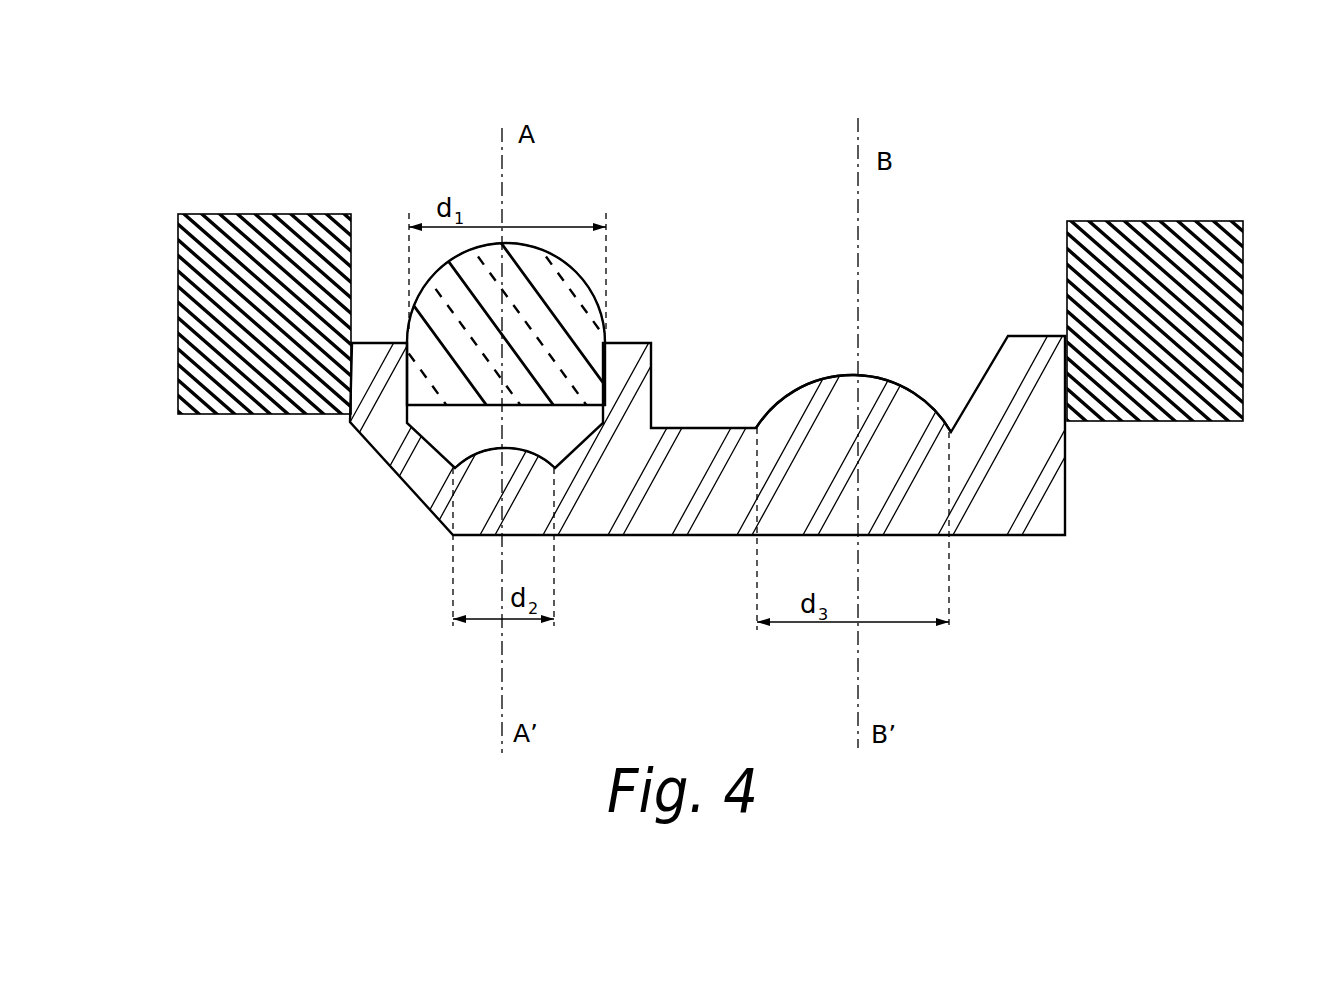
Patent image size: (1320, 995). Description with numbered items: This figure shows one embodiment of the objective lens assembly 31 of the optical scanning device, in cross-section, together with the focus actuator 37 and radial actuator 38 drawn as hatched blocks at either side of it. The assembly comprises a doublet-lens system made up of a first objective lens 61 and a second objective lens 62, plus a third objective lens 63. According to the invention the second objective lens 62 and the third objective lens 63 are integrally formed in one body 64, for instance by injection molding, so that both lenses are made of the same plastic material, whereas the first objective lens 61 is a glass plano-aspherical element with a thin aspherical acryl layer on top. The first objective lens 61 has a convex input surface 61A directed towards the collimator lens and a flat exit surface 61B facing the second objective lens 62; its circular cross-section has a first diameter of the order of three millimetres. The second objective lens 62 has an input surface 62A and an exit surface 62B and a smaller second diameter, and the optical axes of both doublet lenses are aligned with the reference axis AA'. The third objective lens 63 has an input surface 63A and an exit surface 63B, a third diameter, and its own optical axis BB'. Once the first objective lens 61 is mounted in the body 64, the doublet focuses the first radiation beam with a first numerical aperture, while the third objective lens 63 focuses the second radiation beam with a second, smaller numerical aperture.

The objective lens assembly 31 is at (985, 133).
The focus actuator 37 is at (660, 276).
The radial actuator 38 is at (177, 352).
The first objective lens 61 is at (662, 312).
The input surface 61A is at (418, 282).
The exit surface 61B is at (436, 405).
The second objective lens 62 is at (558, 448).
The input surface 62A is at (473, 453).
The exit surface 62B is at (453, 568).
The third objective lens 63 is at (824, 359).
The input surface 63A is at (917, 390).
The exit surface 63B is at (900, 537).
The body 64 is at (1065, 469).